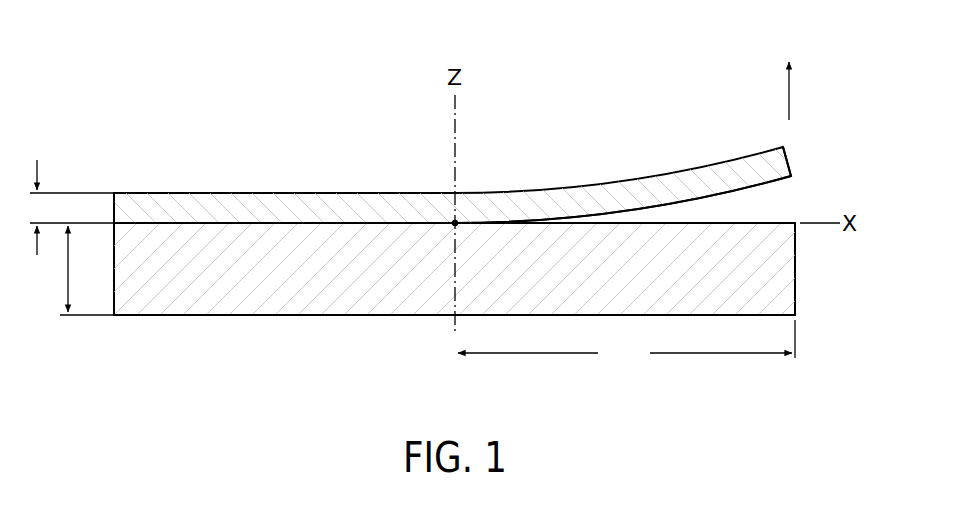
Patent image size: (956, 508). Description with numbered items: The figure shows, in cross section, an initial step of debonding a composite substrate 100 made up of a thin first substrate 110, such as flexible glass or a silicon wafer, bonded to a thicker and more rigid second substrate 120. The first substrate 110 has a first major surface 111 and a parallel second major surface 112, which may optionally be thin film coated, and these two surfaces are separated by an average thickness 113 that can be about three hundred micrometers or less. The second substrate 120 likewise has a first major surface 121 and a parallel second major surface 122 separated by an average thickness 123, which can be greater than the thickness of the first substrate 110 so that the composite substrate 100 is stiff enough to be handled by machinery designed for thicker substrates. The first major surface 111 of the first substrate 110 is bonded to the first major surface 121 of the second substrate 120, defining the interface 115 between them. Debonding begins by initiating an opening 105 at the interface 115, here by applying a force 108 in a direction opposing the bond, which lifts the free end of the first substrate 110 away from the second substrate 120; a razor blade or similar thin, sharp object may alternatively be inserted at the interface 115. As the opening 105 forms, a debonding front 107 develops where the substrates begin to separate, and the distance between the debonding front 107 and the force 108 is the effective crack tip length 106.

The composite substrate 100 is at (183, 112).
The opening 105 is at (831, 176).
The effective crack tip length 106 is at (626, 343).
The debonding front 107 is at (456, 222).
The force 108 is at (789, 98).
The first substrate 110 is at (250, 200).
The first major surface 111 is at (790, 186).
The second major surface 112 is at (145, 192).
The average thickness 113 is at (61, 207).
The interface 115 is at (345, 221).
The second substrate 120 is at (250, 298).
The first major surface 121 is at (750, 219).
The second major surface 122 is at (146, 319).
The average thickness 123 is at (80, 270).